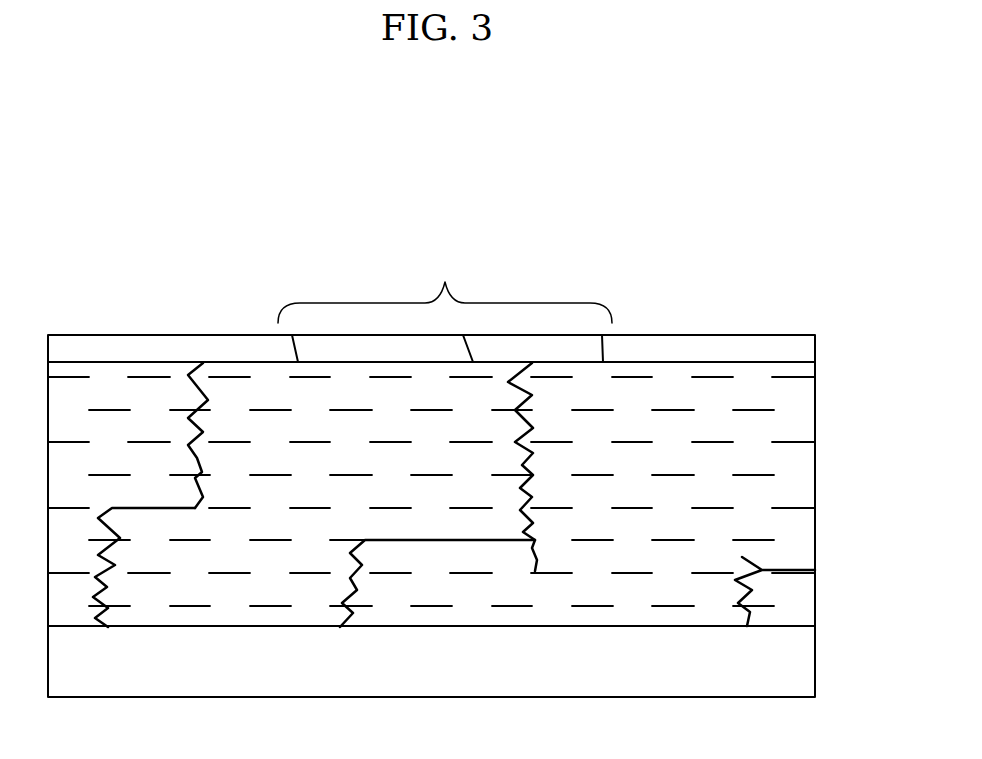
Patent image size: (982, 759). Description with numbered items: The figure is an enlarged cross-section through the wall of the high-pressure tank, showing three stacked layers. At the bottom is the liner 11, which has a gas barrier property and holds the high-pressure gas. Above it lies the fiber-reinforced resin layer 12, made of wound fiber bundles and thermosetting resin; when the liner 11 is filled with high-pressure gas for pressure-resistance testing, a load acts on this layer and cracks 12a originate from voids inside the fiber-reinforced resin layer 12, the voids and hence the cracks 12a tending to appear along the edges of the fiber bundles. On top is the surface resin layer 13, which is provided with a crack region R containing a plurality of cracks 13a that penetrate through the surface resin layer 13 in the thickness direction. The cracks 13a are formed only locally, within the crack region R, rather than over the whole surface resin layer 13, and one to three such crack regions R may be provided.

The liner 11 is at (783, 664).
The fiber-reinforced resin layer 12 is at (785, 528).
The cracks 12a is at (108, 575).
The surface resin layer 13 is at (783, 347).
The cracks 13a is at (603, 340).
The crack region R is at (445, 289).